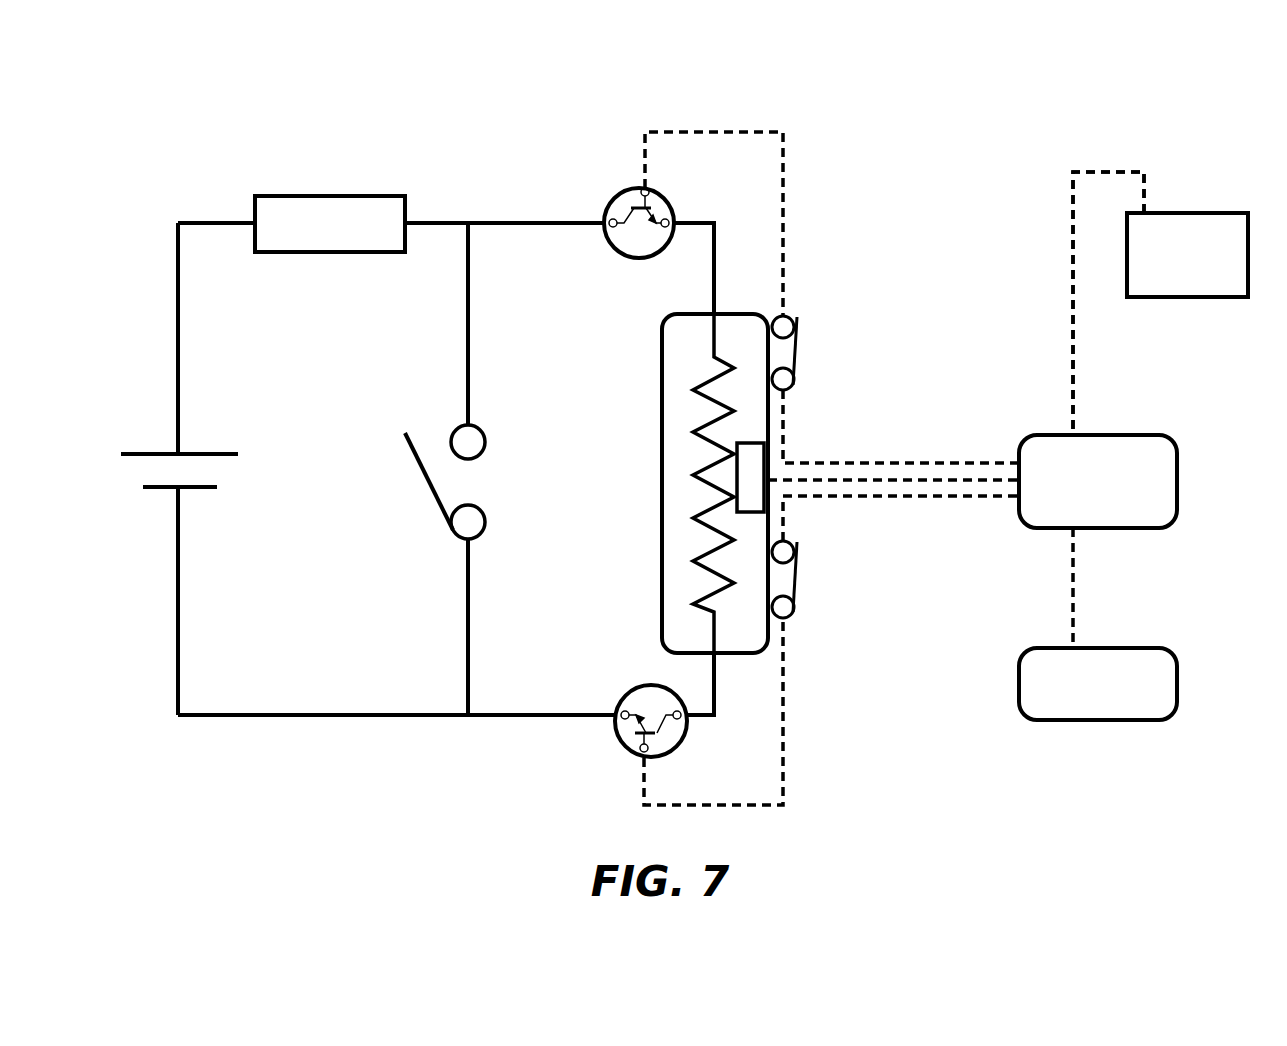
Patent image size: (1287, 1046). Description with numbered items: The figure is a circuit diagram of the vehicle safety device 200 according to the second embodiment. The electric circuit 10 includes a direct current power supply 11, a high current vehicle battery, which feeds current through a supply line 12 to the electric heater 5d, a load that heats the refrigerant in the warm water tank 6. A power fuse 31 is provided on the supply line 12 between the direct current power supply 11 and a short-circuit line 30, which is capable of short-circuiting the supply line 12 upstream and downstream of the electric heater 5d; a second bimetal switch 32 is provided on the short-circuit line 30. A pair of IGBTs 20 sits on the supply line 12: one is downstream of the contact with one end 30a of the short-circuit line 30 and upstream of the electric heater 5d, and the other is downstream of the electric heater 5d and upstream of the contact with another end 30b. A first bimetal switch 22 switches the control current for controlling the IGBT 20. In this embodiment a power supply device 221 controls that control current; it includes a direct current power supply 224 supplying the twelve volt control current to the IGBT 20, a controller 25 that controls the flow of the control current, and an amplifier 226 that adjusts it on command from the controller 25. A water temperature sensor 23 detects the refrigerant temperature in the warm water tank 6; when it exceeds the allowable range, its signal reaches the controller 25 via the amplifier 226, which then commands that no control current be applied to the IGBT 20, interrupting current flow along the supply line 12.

The electric circuit 10 is at (188, 163).
The direct current power supply 11 is at (160, 452).
The supply line 12 is at (216, 222).
The power fuse 31 is at (302, 195).
The short-circuit line 30 is at (466, 341).
The one end of the short-circuit line 30a is at (470, 228).
The another end of the short-circuit line 30b is at (470, 712).
The second bimetal switch 32 is at (414, 463).
The insulated gate bipolar transistor (IGBT) 20 is at (630, 190).
The warm water tank 6 is at (660, 462).
The electric heater 5d is at (708, 418).
The water temperature sensor 23 is at (735, 508).
The first bimetal switch 22 is at (797, 351).
The vehicle safety device 200 is at (1226, 143).
The power supply device 221 is at (1045, 228).
The direct current power supply 224 is at (1238, 300).
The amplifier 226 is at (1180, 481).
The controller 25 is at (1180, 684).